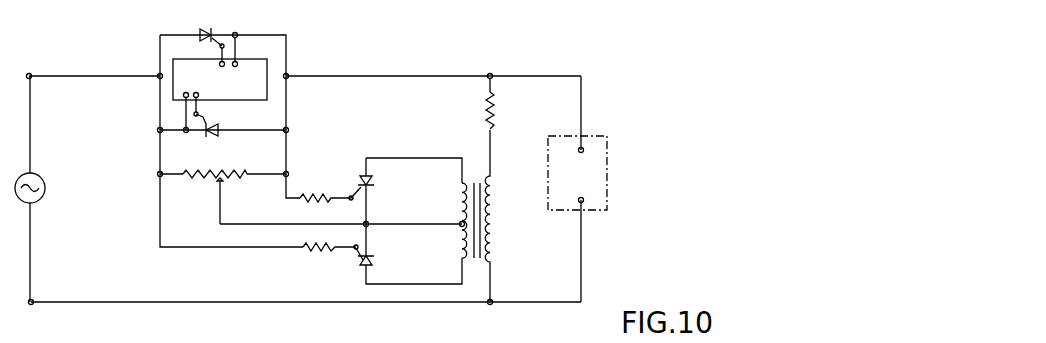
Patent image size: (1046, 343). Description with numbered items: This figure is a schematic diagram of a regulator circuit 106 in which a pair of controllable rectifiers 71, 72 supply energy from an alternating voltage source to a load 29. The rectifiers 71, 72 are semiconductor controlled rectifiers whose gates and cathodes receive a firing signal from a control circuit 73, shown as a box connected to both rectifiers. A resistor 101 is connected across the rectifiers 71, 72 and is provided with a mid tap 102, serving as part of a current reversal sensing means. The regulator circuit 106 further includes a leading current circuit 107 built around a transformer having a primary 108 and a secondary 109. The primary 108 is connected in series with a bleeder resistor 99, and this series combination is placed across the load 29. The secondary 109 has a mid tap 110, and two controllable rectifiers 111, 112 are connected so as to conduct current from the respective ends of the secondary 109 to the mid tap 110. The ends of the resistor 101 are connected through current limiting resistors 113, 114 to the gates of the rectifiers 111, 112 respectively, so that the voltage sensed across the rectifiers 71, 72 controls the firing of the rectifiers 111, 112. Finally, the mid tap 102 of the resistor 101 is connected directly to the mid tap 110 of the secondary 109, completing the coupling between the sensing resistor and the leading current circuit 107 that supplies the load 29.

The load 29 is at (607, 178).
The controllable rectifier 71 is at (214, 18).
The controllable rectifier 72 is at (215, 140).
The control circuit 73 is at (236, 101).
The bleeder resistor 99 is at (493, 106).
The resistor 101 is at (208, 170).
The mid tap 102 is at (218, 181).
The regulator circuit 106 is at (361, 118).
The leading current circuit 107 is at (425, 181).
The primary 108 is at (492, 222).
The secondary 109 is at (461, 237).
The mid tap 110 is at (461, 214).
The controllable rectifier 111 is at (360, 179).
The controllable rectifier 112 is at (362, 262).
The current limiting resistor 113 is at (300, 198).
The current limiting resistor 114 is at (303, 247).